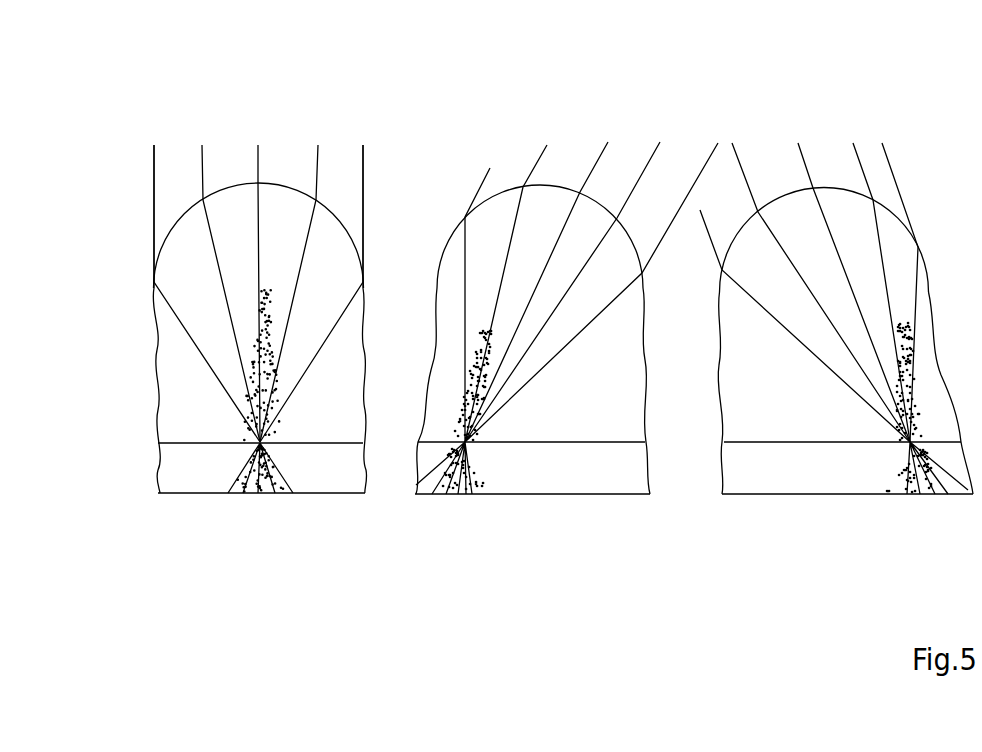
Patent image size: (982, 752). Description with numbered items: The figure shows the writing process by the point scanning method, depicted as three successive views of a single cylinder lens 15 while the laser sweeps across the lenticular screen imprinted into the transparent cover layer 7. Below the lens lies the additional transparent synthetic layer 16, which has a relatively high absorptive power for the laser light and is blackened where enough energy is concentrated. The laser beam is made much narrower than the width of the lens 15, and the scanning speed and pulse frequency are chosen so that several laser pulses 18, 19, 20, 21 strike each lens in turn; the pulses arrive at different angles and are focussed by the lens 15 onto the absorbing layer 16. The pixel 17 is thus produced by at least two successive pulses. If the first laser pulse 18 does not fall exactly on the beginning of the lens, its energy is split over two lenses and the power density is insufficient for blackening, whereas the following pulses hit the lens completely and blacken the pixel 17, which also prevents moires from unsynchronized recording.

The transparent cover layer 7 is at (182, 400).
The cylinder lenses 15 is at (340, 218).
The additional transparent synthetic layer 16 is at (203, 478).
The pixel 17 is at (278, 495).
The first laser pulse 18 is at (173, 157).
The laser pulse 19 is at (222, 157).
The laser pulse 20 is at (280, 155).
The laser pulse 21 is at (338, 155).